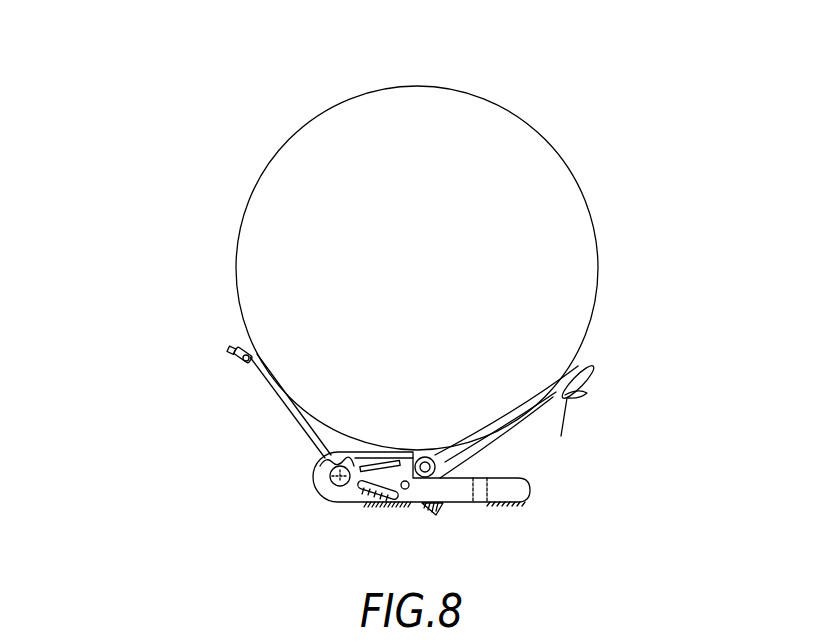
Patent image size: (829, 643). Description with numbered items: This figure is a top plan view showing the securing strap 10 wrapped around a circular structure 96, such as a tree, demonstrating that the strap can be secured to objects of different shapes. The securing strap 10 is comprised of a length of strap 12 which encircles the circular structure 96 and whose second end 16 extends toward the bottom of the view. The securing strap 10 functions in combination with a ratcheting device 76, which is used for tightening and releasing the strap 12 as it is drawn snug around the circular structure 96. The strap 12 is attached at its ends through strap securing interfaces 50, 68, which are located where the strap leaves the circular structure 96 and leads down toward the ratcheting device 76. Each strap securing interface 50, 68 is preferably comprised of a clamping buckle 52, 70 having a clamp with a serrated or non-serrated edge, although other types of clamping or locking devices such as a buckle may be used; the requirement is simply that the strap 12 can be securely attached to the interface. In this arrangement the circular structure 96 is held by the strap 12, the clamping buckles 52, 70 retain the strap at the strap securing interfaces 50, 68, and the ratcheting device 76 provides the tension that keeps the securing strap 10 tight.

The securing strap 10 is at (114, 41).
The strap 12 is at (317, 118).
The second end 16 is at (367, 508).
The strap securing interface 50 is at (597, 380).
The clamping buckle 52 is at (578, 399).
The strap securing interface 68 is at (220, 348).
The clamping buckle 70 is at (240, 354).
The ratcheting device 76 is at (447, 505).
The circular structure 96 is at (377, 262).